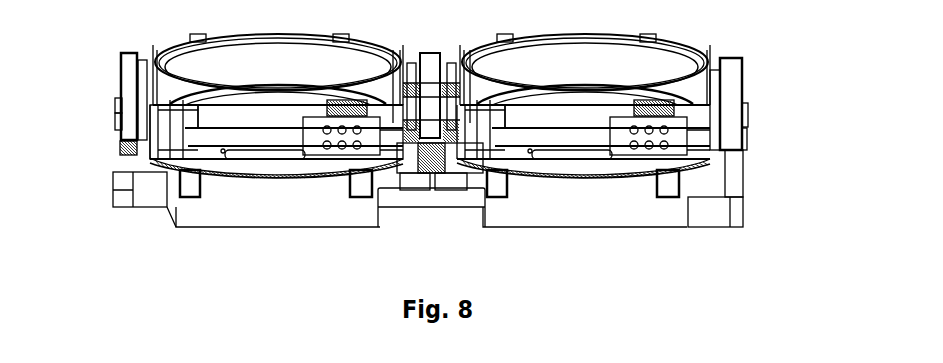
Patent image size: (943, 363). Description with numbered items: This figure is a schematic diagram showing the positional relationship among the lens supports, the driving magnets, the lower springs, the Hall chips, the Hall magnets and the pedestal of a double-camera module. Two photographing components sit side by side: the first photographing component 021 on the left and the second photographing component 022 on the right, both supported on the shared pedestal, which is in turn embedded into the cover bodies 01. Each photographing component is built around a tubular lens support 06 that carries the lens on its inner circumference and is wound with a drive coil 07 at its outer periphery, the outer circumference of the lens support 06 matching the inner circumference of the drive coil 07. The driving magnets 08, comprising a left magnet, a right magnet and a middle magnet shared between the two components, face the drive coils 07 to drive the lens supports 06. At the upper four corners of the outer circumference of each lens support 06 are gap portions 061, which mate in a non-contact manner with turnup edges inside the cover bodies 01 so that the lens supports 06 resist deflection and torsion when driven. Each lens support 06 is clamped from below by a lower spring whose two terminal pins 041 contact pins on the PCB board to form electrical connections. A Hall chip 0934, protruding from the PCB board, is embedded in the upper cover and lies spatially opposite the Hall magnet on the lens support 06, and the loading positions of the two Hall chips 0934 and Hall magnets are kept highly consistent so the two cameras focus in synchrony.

The lens support 06 is at (235, 130).
The driving magnet 08 is at (128, 97).
The first photographing component 021 is at (103, 112).
The drive coil 07 is at (235, 132).
The terminal pin 041 is at (132, 187).
The gap portion 061 is at (487, 113).
The Hall chip 0934 is at (677, 144).
The second photographing component 022 is at (797, 131).
The cover body 01 is at (540, 190).